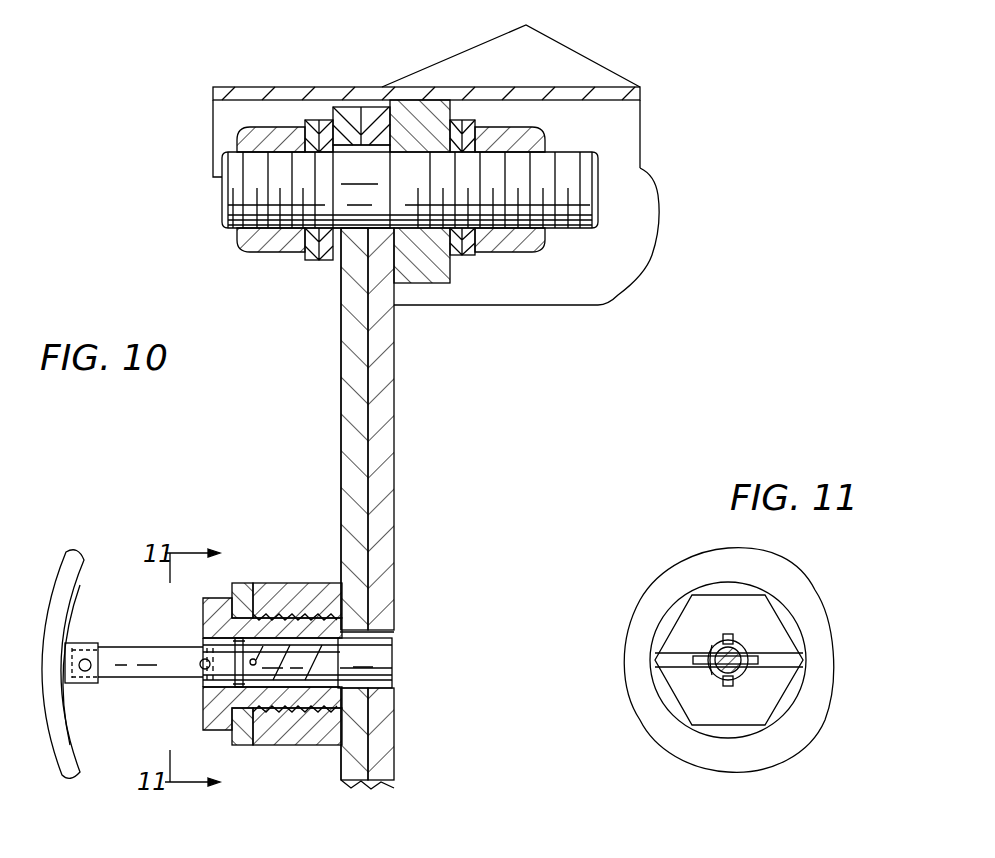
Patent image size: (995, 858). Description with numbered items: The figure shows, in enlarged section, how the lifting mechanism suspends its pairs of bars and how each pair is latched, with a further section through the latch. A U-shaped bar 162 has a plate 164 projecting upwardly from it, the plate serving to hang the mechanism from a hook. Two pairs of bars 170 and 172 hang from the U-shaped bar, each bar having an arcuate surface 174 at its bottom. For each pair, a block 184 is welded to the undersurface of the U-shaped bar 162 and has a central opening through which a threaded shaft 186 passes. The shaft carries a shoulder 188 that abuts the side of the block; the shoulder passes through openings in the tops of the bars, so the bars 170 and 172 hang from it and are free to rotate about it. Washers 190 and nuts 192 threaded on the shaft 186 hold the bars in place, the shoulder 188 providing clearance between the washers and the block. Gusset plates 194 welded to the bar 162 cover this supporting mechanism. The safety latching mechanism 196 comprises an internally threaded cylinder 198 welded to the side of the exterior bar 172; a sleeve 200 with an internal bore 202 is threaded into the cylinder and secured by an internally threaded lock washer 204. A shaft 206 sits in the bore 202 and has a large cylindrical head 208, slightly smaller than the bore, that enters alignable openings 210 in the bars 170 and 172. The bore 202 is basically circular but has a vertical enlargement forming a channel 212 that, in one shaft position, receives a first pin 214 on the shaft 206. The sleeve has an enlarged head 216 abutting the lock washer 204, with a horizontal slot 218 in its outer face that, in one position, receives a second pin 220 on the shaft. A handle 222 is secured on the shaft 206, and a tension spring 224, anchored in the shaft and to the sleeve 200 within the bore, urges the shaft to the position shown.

In FIG. 10, the U-shaped bar 162 is at (637, 122).
In FIG. 10, the plate 164 is at (584, 62).
In FIG. 10, the bar 170 is at (390, 428).
In FIG. 10, the bar 172 is at (341, 385).
In FIG. 11, the arcuate surface 174 is at (667, 580).
In FIG. 10, the block 184 is at (430, 296).
In FIG. 10, the threaded shaft 186 is at (596, 226).
In FIG. 10, the shoulder 188 is at (361, 167).
In FIG. 10, the washer 190 is at (323, 262).
In FIG. 10, the nut 192 is at (272, 248).
In FIG. 10, the gusset plate 194 is at (633, 282).
In FIG. 10, the safety latching mechanism 196 is at (236, 552).
In FIG. 10, the cylinder 198 is at (297, 590).
In FIG. 10, the sleeve 200 is at (203, 612).
In FIG. 10, the internal bore 202 is at (207, 684).
In FIG. 11, the internal bore 202 is at (745, 648).
In FIG. 10, the lock washer 204 is at (245, 582).
In FIG. 11, the lock washer 204 is at (757, 587).
In FIG. 10, the shaft 206 is at (108, 648).
In FIG. 10, the cylindrical head 208 is at (390, 655).
In FIG. 10, the alignable opening 210 is at (360, 633).
In FIG. 11, the vertical channel 212 is at (725, 636).
In FIG. 10, the first pin 214 is at (240, 688).
In FIG. 11, the first pin 214 is at (733, 632).
In FIG. 10, the enlarged head 216 is at (232, 598).
In FIG. 11, the enlarged head 216 is at (788, 640).
In FIG. 10, the horizontally extending slot 218 is at (207, 645).
In FIG. 11, the horizontally extending slot 218 is at (800, 660).
In FIG. 10, the second pin 220 is at (200, 668).
In FIG. 10, the handle 222 is at (55, 575).
In FIG. 10, the tension spring 224 is at (392, 676).